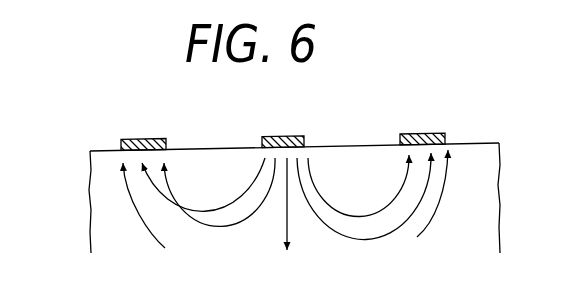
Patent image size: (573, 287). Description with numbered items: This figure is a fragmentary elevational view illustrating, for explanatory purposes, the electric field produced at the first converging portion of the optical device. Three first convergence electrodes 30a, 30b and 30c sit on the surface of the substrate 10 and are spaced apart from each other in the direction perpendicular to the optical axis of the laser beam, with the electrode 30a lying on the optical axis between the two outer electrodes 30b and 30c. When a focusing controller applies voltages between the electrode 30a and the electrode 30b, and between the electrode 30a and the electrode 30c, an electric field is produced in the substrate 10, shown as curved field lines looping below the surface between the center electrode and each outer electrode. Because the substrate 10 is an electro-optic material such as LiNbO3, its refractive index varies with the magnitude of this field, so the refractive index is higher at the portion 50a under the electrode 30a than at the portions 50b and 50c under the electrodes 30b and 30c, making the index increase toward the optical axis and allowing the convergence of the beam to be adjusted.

The substrate 10 is at (91, 214).
The first convergence electrode 30a is at (282, 136).
The first convergence electrode 30b is at (432, 134).
The first convergence electrode 30c is at (150, 139).
The portion under the electrode 30a 50a is at (312, 151).
The portion under the electrode 30b 50b is at (452, 149).
The portion under the electrode 30c 50c is at (131, 159).